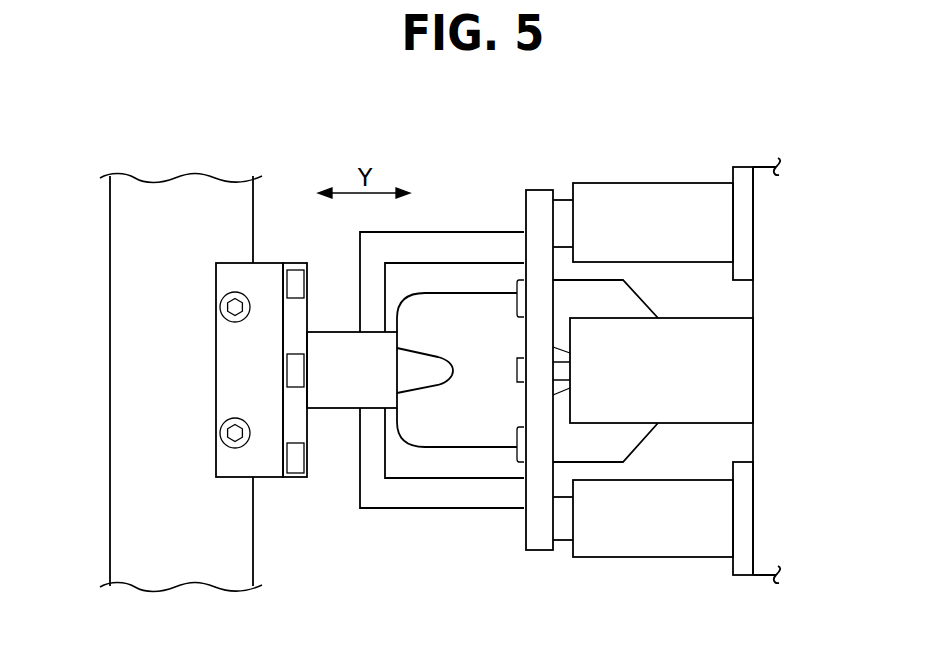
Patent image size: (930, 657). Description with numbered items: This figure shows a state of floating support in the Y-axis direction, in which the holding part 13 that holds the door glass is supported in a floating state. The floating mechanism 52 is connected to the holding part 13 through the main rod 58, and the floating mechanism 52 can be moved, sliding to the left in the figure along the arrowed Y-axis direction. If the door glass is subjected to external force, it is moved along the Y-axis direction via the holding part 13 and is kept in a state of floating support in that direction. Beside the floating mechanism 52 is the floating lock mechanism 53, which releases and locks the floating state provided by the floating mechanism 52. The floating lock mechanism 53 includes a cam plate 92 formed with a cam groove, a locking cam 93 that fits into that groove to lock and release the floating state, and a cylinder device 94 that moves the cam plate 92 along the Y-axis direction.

The holding part 13 is at (109, 353).
The floating mechanism 52 is at (455, 233).
The floating lock mechanism 53 is at (645, 184).
The main rod 58 is at (332, 395).
The cam plate 92 is at (605, 445).
The locking cam 93 is at (420, 375).
The cylinder device 94 is at (708, 372).